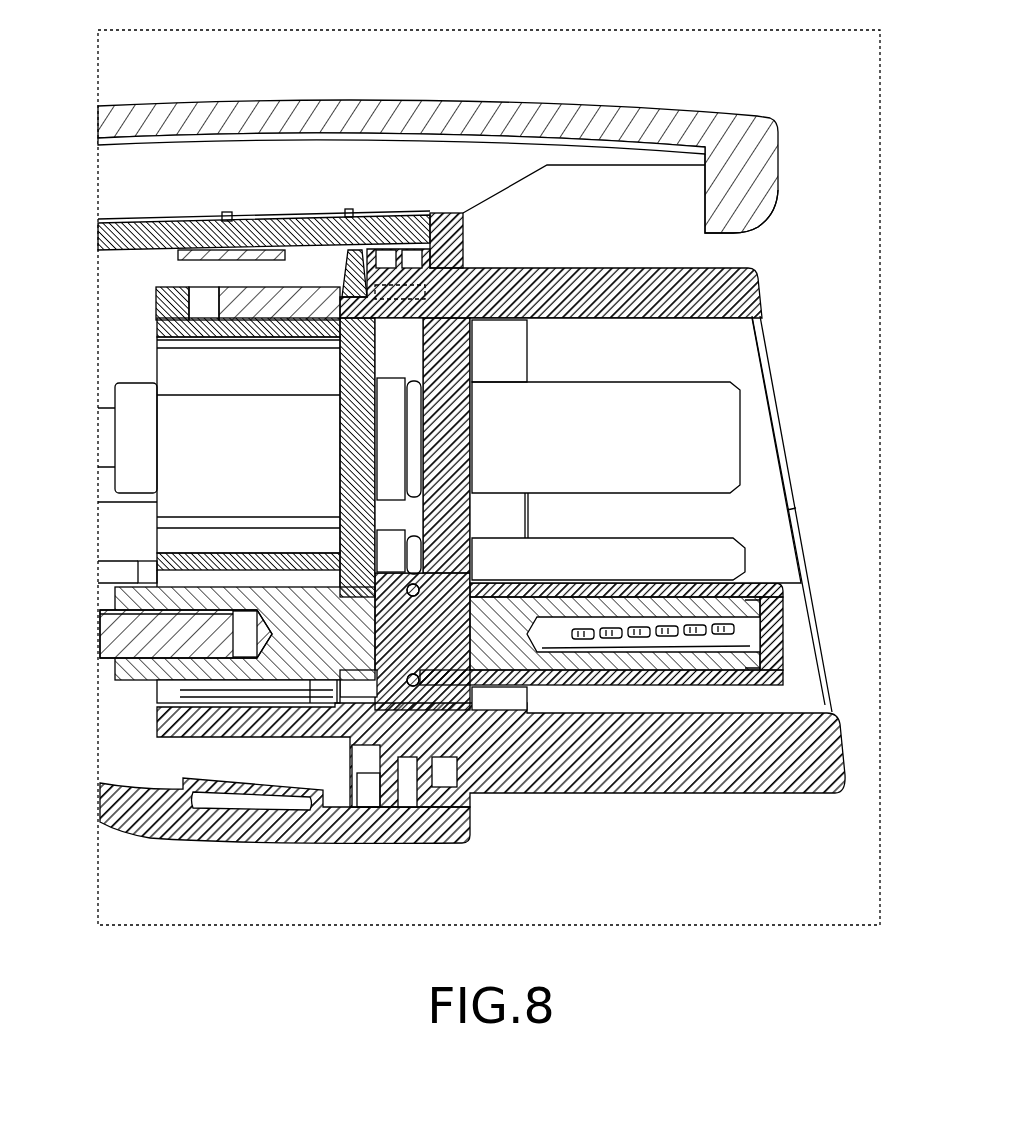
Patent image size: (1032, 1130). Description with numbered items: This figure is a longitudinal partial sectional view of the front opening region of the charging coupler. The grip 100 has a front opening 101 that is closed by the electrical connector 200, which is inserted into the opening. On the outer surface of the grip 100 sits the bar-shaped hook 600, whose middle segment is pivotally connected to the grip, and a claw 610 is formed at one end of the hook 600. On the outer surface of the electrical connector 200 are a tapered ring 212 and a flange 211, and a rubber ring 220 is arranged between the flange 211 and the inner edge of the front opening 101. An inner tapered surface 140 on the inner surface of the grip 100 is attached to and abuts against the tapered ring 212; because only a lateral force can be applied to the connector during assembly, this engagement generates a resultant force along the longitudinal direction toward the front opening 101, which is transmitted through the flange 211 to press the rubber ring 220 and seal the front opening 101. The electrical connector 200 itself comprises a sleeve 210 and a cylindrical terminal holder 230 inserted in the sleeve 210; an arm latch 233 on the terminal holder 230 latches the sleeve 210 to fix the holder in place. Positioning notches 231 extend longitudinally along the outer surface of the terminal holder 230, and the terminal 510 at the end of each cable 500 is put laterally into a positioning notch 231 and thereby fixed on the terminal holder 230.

The grip 100 is at (397, 855).
The front opening 101 is at (468, 265).
The inner tapered surface 140 is at (367, 245).
The electrical connector 200 is at (615, 381).
The sleeve 210 is at (566, 262).
The flange 211 is at (410, 247).
The tapered ring 212 is at (394, 248).
The rubber ring 220 is at (431, 225).
The terminal holder 230 is at (337, 737).
The positioning notch 231 is at (158, 576).
The arm latch 233 is at (197, 290).
The cable 500 is at (135, 641).
The terminal 510 is at (492, 655).
The hook 600 is at (485, 141).
The claw 610 is at (746, 201).